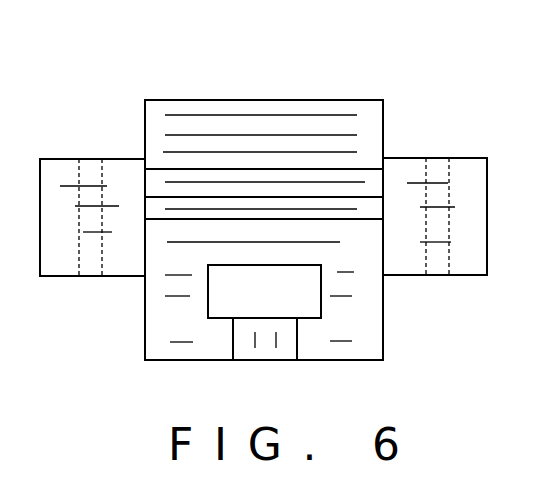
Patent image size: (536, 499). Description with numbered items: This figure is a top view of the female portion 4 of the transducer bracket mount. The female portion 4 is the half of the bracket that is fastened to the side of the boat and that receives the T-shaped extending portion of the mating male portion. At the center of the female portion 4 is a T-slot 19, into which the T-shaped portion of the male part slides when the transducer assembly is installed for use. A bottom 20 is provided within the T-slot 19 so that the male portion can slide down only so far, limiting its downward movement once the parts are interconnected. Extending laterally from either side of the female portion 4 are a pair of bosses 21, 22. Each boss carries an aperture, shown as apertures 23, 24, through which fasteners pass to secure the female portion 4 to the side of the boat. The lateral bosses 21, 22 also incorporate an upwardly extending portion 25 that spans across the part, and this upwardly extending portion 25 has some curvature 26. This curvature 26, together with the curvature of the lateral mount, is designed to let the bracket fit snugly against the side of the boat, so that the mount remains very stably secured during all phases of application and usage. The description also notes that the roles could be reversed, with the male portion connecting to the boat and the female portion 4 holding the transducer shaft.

The female portion 4 is at (378, 90).
The T-slot 19 is at (227, 299).
The bottom 20 is at (280, 343).
The laterally extending boss 21 is at (42, 277).
The laterally extending boss 22 is at (487, 276).
The aperture 23 is at (80, 178).
The aperture 24 is at (427, 197).
The upwardly extending portion 25 is at (312, 169).
The curvature 26 is at (258, 208).